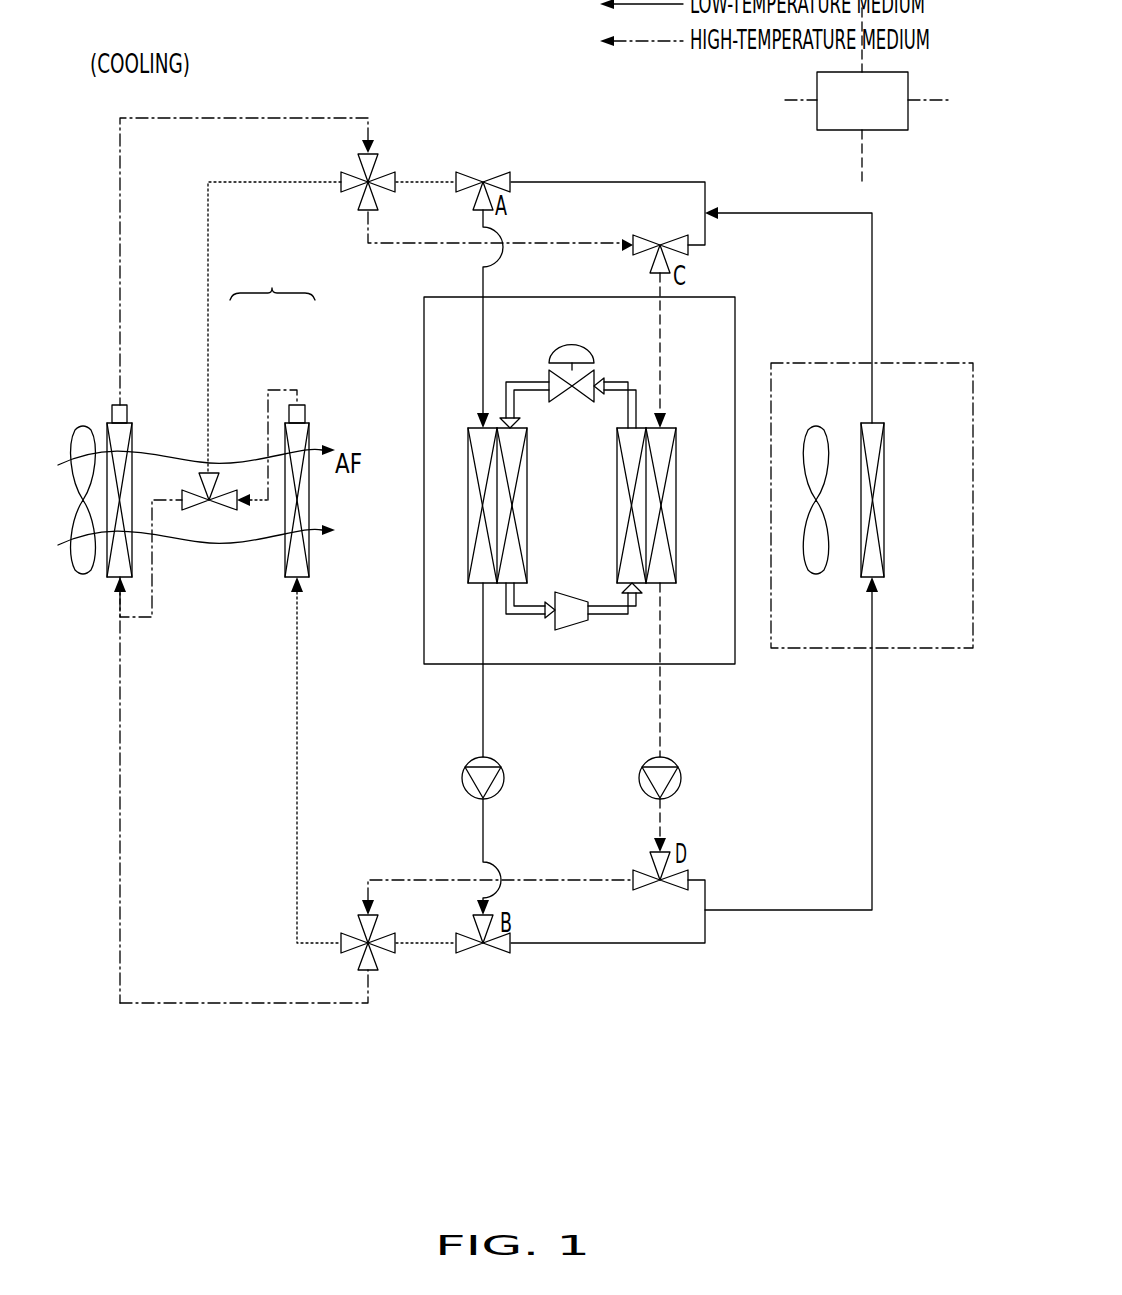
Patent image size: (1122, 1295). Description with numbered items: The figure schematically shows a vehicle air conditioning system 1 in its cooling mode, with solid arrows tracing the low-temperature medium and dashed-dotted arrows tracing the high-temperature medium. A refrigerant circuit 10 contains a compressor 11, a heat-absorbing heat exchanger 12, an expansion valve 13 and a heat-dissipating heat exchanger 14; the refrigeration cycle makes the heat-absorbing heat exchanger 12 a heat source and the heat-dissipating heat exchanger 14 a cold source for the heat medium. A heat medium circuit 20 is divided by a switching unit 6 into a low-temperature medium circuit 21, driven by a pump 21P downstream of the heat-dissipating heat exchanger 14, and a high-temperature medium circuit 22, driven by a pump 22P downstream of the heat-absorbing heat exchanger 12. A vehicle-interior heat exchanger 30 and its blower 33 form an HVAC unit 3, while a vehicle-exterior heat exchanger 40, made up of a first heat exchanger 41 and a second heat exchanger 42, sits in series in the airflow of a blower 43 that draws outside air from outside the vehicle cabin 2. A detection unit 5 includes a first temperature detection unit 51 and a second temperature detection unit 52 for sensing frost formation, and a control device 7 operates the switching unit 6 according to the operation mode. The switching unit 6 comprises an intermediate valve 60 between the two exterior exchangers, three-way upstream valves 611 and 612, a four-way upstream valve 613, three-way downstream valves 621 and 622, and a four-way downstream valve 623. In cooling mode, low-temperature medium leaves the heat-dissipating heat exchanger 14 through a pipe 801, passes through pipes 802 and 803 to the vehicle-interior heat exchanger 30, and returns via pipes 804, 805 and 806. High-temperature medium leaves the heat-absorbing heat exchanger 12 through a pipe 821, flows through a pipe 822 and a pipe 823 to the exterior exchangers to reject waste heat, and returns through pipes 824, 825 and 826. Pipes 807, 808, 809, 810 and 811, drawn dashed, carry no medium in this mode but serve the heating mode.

The vehicle air conditioning system 1 is at (313, 72).
The vehicle cabin 2 is at (956, 567).
The HVAC unit 3 is at (920, 362).
The detection unit 5 is at (547, 1062).
The switching unit 6 is at (722, 1040).
The control device 7 is at (910, 80).
The refrigerant circuit 10 is at (735, 303).
The compressor 11 is at (570, 592).
The heat-absorbing heat exchanger 12 is at (676, 505).
The expansion valve 13 is at (575, 345).
The heat-dissipating heat exchanger 14 is at (468, 505).
The heat medium circuit 20 is at (527, 116).
The low-temperature medium circuit 21 is at (458, 710).
The high-temperature medium circuit 22 is at (682, 710).
The pump 21P is at (462, 780).
The pump 22P is at (680, 780).
The vehicle-interior heat exchanger 30 is at (867, 422).
The blower 33 is at (816, 427).
The vehicle-exterior heat exchanger 40 is at (272, 280).
The first heat exchanger 41 is at (132, 437).
The second heat exchanger 42 is at (308, 437).
The blower 43 is at (83, 427).
The first temperature detection unit 51 is at (127, 400).
The second temperature detection unit 52 is at (289, 403).
The intermediate valve 60 is at (197, 505).
The upstream valve 611 is at (470, 170).
The upstream valve 612 is at (653, 233).
The upstream valve 613 is at (370, 152).
The downstream valve 621 is at (463, 955).
The downstream valve 622 is at (690, 873).
The downstream valve 623 is at (350, 933).
The pipe 801 is at (483, 660).
The pipe 802 is at (592, 945).
The pipe 803 is at (812, 910).
The pipe 804 is at (835, 210).
The pipe 805 is at (592, 178).
The pipe 806 is at (483, 333).
The pipe 807 is at (420, 945).
The pipe 808 is at (415, 180).
The pipe 809 is at (155, 1003).
The pipe 810 is at (208, 313).
The pipe 811 is at (137, 620).
The pipe 821 is at (657, 690).
The pipe 822 is at (530, 875).
The pipe 823 is at (296, 775).
The pipe 824 is at (158, 120).
The pipe 825 is at (583, 240).
The pipe 826 is at (660, 385).